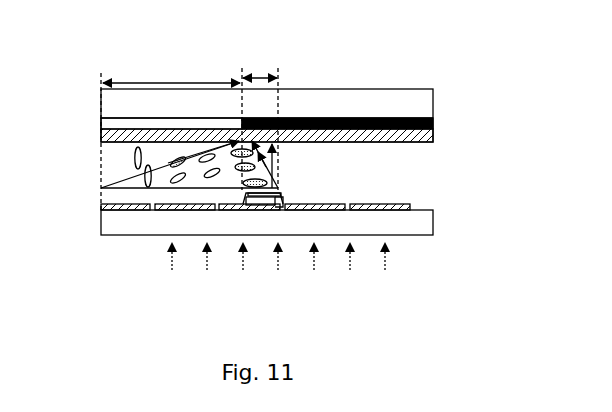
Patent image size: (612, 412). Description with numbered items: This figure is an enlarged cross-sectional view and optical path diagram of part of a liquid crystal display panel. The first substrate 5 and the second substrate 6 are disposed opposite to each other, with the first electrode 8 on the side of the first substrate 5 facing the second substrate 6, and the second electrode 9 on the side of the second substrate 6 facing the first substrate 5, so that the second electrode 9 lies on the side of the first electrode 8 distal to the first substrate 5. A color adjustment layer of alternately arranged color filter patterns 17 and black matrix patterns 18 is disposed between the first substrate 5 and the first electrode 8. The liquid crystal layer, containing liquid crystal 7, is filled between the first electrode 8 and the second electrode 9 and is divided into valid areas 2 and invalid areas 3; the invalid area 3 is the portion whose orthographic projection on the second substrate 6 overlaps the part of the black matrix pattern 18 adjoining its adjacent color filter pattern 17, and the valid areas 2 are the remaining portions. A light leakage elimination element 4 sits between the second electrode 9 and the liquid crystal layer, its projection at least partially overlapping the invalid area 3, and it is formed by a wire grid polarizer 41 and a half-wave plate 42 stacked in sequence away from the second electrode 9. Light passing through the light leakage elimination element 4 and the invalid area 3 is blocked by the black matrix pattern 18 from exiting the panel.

The valid area 2 is at (171, 75).
The invalid area 3 is at (260, 66).
The light leakage elimination element 4 is at (265, 248).
The wire grid polarizer 41 is at (260, 203).
The half-wave plate 42 is at (270, 205).
The first substrate 5 is at (336, 100).
The second substrate 6 is at (412, 223).
The liquid crystal 7 is at (136, 161).
The first electrode 8 is at (102, 135).
The second electrode 9 is at (101, 208).
The color filter pattern 17 is at (148, 125).
The black matrix pattern 18 is at (393, 118).